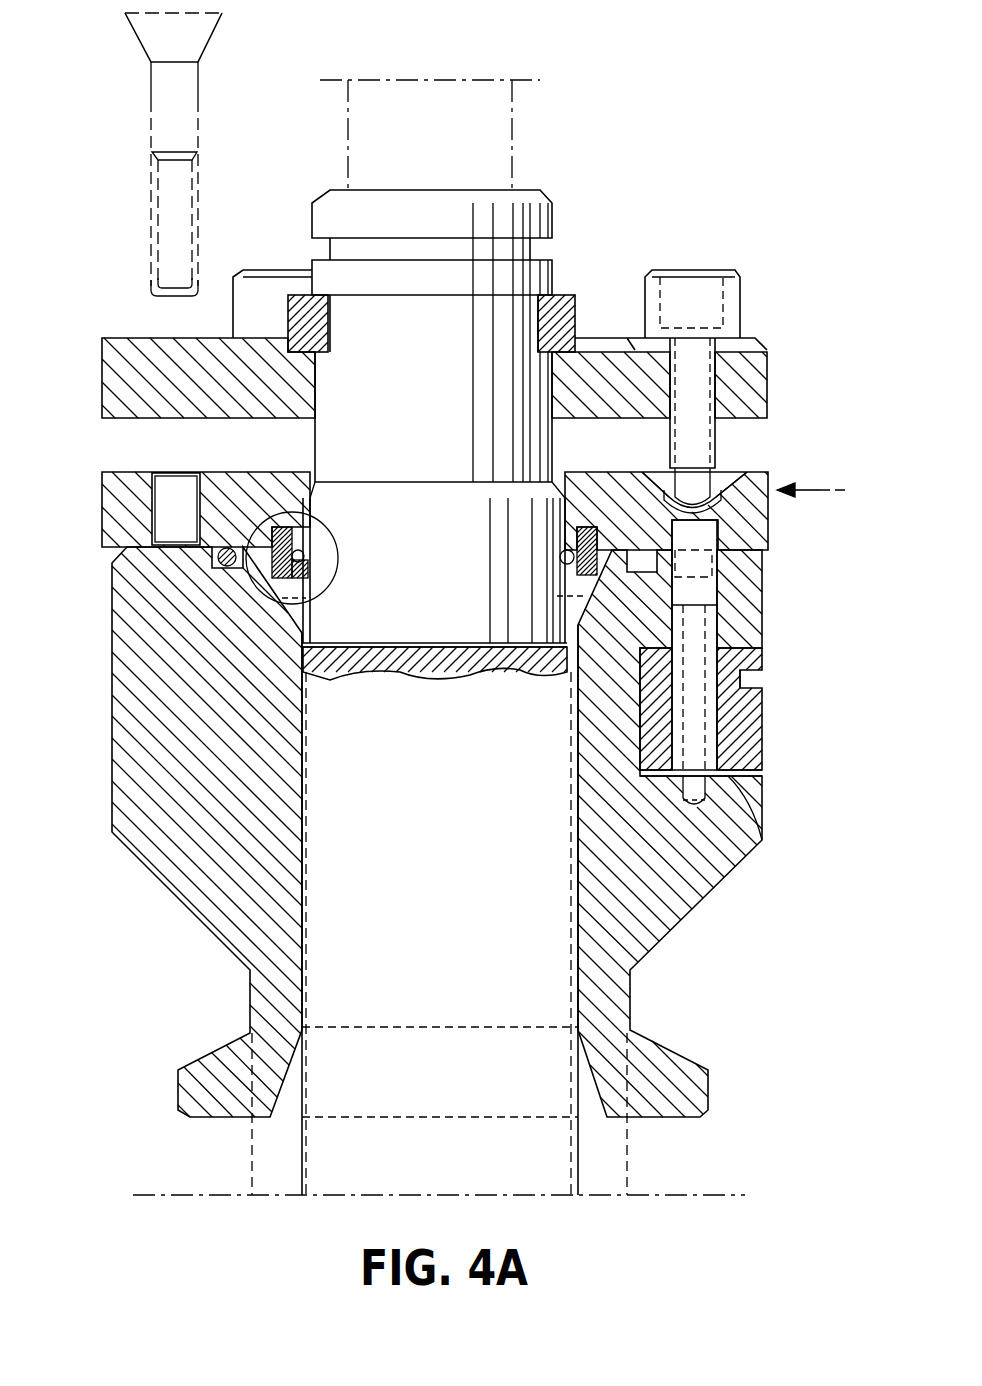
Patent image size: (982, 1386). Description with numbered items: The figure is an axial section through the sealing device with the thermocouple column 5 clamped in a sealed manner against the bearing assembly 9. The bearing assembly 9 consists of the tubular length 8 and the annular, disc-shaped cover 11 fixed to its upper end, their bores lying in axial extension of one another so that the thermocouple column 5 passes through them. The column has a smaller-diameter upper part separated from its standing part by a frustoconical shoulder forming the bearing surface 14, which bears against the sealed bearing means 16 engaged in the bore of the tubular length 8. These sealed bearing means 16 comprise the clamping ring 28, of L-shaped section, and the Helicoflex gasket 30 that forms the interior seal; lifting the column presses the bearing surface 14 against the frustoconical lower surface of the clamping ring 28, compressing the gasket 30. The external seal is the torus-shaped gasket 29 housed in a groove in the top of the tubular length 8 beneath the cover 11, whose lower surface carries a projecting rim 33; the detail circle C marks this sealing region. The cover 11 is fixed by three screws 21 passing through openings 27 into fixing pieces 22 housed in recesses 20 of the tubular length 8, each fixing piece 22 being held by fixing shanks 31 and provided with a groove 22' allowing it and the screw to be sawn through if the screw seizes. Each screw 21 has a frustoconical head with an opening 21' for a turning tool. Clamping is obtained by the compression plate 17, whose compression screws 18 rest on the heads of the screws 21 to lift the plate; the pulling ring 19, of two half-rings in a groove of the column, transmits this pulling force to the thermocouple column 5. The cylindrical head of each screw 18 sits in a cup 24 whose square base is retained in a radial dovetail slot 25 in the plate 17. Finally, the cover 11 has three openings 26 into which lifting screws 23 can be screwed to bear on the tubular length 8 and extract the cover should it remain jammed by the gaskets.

The thermocouple column 5 is at (443, 871).
The tubular length 8 is at (650, 903).
The bearing assembly 9 is at (823, 492).
The cover 11 is at (118, 517).
The bearing surface 14 is at (566, 572).
The sealed bearing means 16 is at (598, 578).
The compression plate 17 is at (122, 370).
The compression screw 18 is at (745, 280).
The pulling ring 19 is at (566, 298).
The recess 20 is at (742, 850).
The screw 21 is at (752, 662).
The opening 21' is at (726, 458).
The fixing piece 22 is at (737, 712).
The groove 22' is at (798, 673).
The lifting screw 23 is at (200, 30).
The cup 24 is at (268, 287).
The radial dovetail slot 25 is at (613, 345).
The opening 26 is at (152, 505).
The opening 27 is at (728, 485).
The clamping ring 28 is at (305, 582).
The torus-shaped gasket 29 is at (225, 558).
The Helicoflex gasket 30 is at (300, 542).
The fixing shank 31 is at (698, 593).
The projecting rim 33 is at (295, 593).
The detail circle C is at (333, 508).